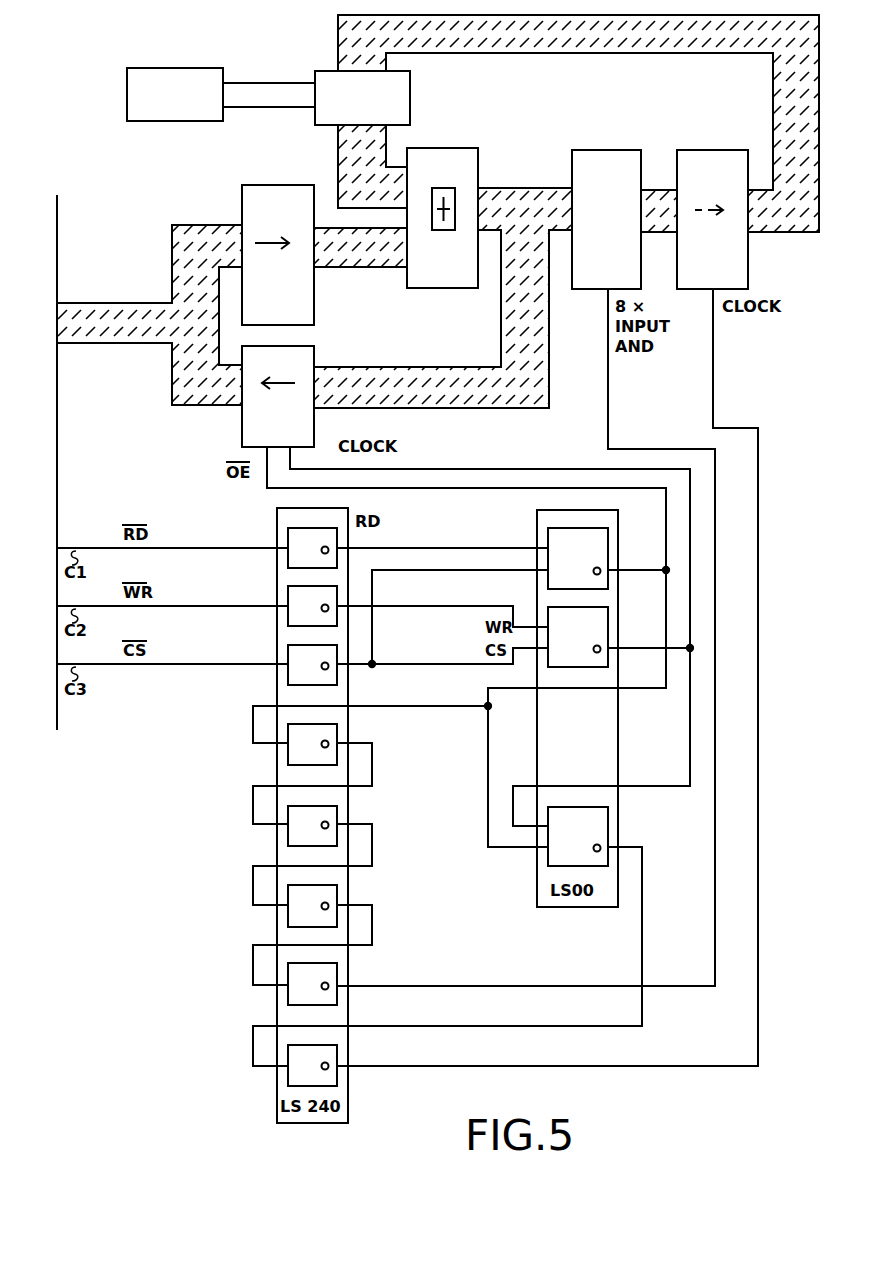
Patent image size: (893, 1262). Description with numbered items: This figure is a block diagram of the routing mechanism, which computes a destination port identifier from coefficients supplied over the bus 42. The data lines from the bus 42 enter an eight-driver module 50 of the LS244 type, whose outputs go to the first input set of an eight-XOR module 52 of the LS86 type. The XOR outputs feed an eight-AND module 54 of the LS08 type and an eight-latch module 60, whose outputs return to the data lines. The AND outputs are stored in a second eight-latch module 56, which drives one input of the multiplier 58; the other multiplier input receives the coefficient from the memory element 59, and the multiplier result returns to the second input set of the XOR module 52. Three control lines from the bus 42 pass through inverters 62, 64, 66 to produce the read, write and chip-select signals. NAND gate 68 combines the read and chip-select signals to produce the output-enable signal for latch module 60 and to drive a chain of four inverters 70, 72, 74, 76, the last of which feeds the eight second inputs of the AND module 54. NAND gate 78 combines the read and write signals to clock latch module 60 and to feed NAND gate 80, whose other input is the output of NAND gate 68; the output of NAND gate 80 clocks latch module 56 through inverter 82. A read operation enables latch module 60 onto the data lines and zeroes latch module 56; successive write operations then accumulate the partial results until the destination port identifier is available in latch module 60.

The bus 42 is at (85, 462).
The 8-driver module 50 is at (274, 185).
The 8-XOR circuit module 52 is at (465, 148).
The 8-AND gate module 54 is at (605, 148).
The 8-latch module 56 is at (705, 148).
The multiplier 58 is at (411, 92).
The memory element 59 is at (178, 68).
The 8-latch module 60 is at (314, 353).
The inverter 62 is at (292, 532).
The inverter 64 is at (310, 596).
The inverter 66 is at (290, 672).
The NAND gate 68 is at (600, 543).
The inverter 70 is at (290, 750).
The inverter 72 is at (290, 832).
The inverter 74 is at (290, 912).
The inverter 76 is at (290, 990).
The NAND gate 78 is at (597, 633).
The NAND gate 80 is at (595, 833).
The inverter 82 is at (290, 1072).